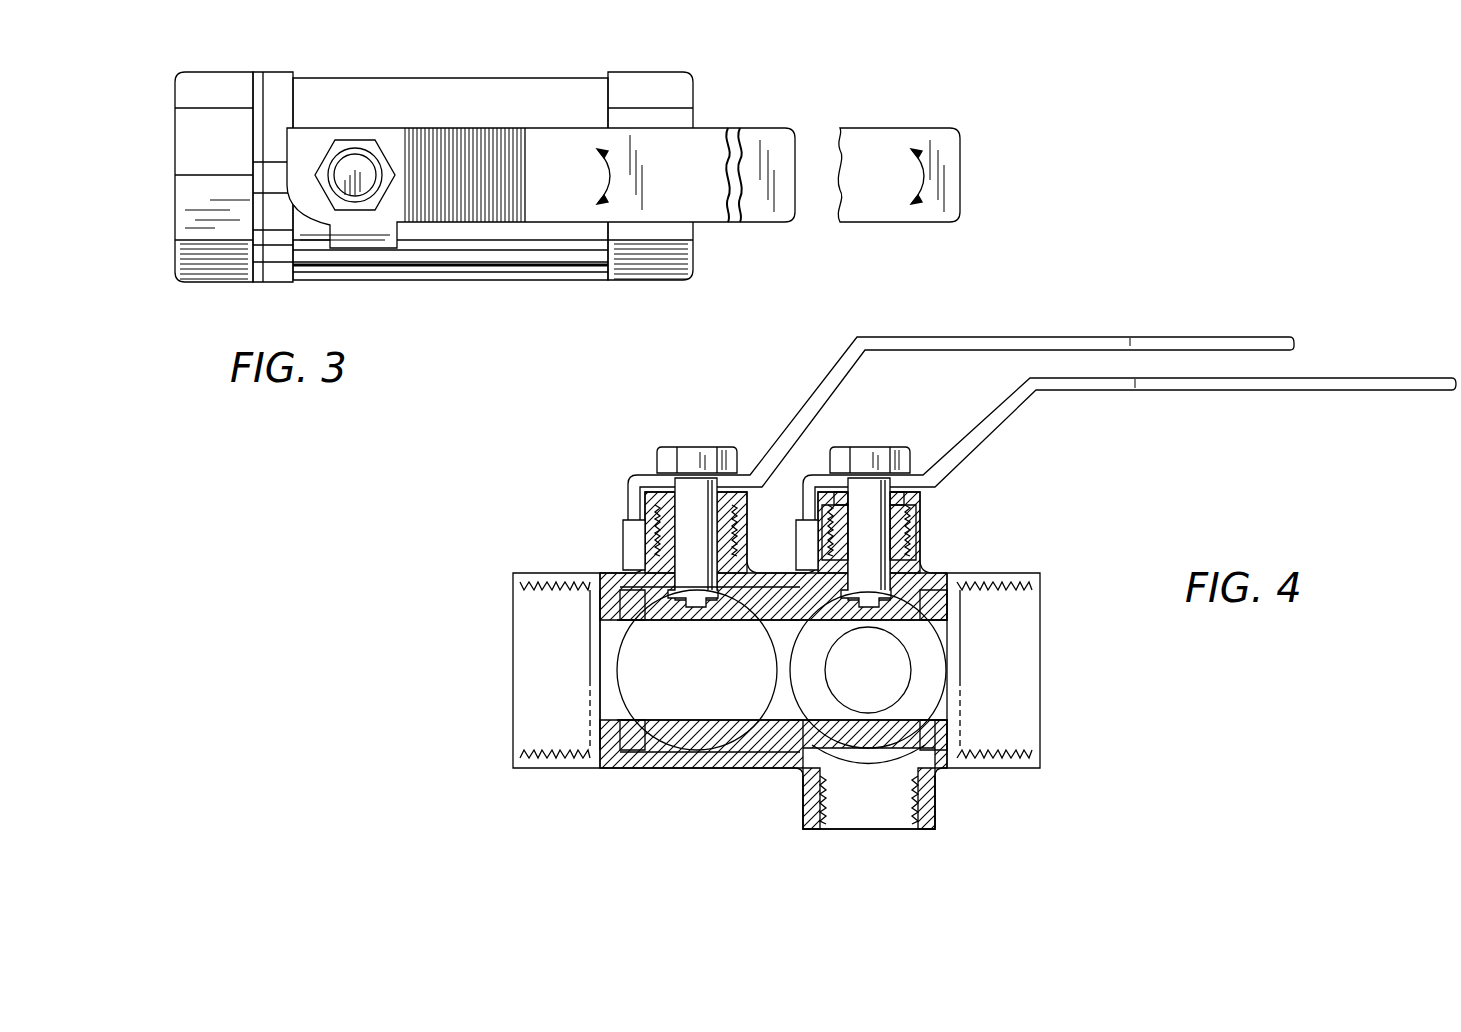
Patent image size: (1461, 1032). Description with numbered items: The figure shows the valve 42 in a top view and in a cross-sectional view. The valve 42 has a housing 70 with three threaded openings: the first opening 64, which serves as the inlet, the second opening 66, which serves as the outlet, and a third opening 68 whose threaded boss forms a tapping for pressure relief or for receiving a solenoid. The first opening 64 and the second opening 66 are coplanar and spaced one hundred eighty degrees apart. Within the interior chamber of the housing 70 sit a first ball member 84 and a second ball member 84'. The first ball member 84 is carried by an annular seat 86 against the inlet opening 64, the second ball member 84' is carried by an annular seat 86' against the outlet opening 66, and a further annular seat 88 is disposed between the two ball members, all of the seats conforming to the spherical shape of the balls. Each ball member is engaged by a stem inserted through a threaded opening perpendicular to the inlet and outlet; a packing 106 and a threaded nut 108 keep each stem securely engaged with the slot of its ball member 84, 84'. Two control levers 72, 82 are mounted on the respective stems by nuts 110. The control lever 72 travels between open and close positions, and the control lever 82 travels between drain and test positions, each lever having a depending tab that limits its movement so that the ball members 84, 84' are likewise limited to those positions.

In FIG. 3, the valve 42 is at (530, 70).
In FIG. 4, the valve 42 is at (612, 512).
In FIG. 3, the first opening 64 is at (700, 243).
In FIG. 4, the first opening 64 is at (1035, 665).
In FIG. 3, the second opening 66 is at (172, 205).
In FIG. 4, the second opening 66 is at (535, 665).
In FIG. 4, the third opening 68 is at (887, 830).
In FIG. 3, the housing 70 is at (450, 262).
In FIG. 4, the housing 70 is at (968, 574).
In FIG. 3, the control lever 72 is at (565, 222).
In FIG. 4, the control lever 72 is at (1190, 337).
In FIG. 3, the control lever 82 is at (905, 137).
In FIG. 4, the control lever 82 is at (1350, 378).
In FIG. 4, the first ball member 84 is at (868, 731).
In FIG. 4, the second ball member 84' is at (708, 710).
In FIG. 4, the annular seat 86 is at (968, 700).
In FIG. 4, the annular seat 86' is at (625, 716).
In FIG. 4, the annular seat 88 is at (778, 745).
In FIG. 4, the packing 106 is at (918, 540).
In FIG. 4, the threaded nut 108 is at (917, 497).
In FIG. 4, the nut 110 is at (900, 446).